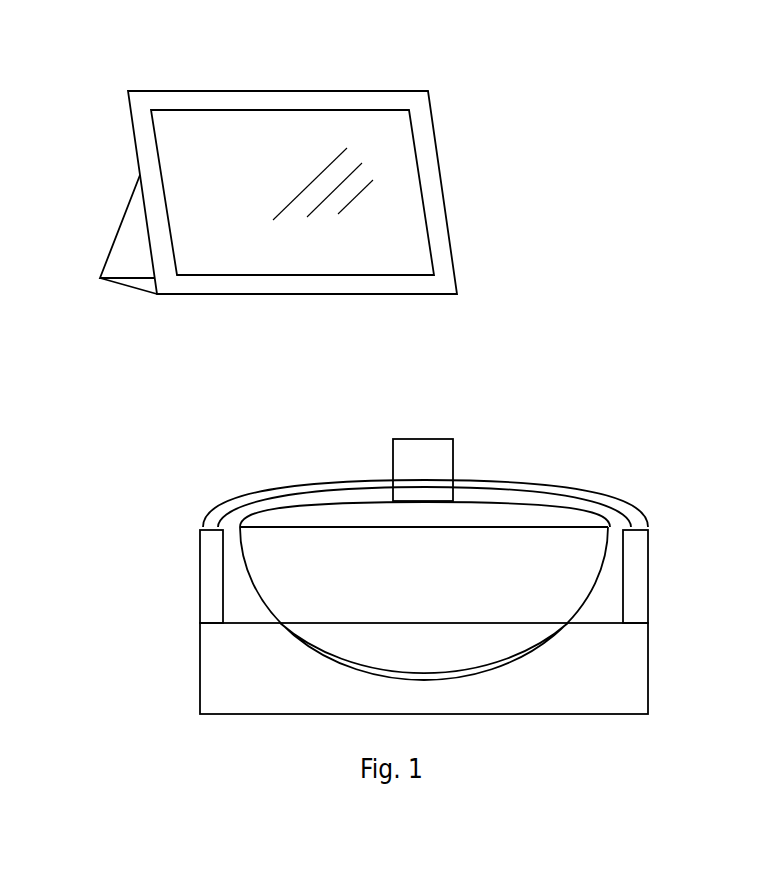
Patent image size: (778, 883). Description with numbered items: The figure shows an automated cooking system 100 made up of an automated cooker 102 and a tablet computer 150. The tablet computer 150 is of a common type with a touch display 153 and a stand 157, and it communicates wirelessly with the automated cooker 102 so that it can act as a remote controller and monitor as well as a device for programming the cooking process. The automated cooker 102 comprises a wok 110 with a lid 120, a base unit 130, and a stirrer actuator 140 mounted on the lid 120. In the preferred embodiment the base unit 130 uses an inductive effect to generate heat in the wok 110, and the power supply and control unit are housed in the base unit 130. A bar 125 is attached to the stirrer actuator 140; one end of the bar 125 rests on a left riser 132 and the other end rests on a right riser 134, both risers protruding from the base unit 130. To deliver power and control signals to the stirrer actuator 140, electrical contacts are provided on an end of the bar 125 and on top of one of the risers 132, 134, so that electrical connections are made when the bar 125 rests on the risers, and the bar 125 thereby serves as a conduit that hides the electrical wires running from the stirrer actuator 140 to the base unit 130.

The automated cooking system 100 is at (607, 72).
The automated cooker 102 is at (422, 550).
The wok 110 is at (424, 603).
The lid 120 is at (345, 503).
The bar 125 is at (497, 480).
The base unit 130 is at (424, 668).
The left riser 132 is at (198, 580).
The right riser 134 is at (648, 582).
The stirrer actuator 140 is at (430, 439).
The tablet computer 150 is at (210, 88).
The touch display 153 is at (312, 127).
The stand 157 is at (123, 220).